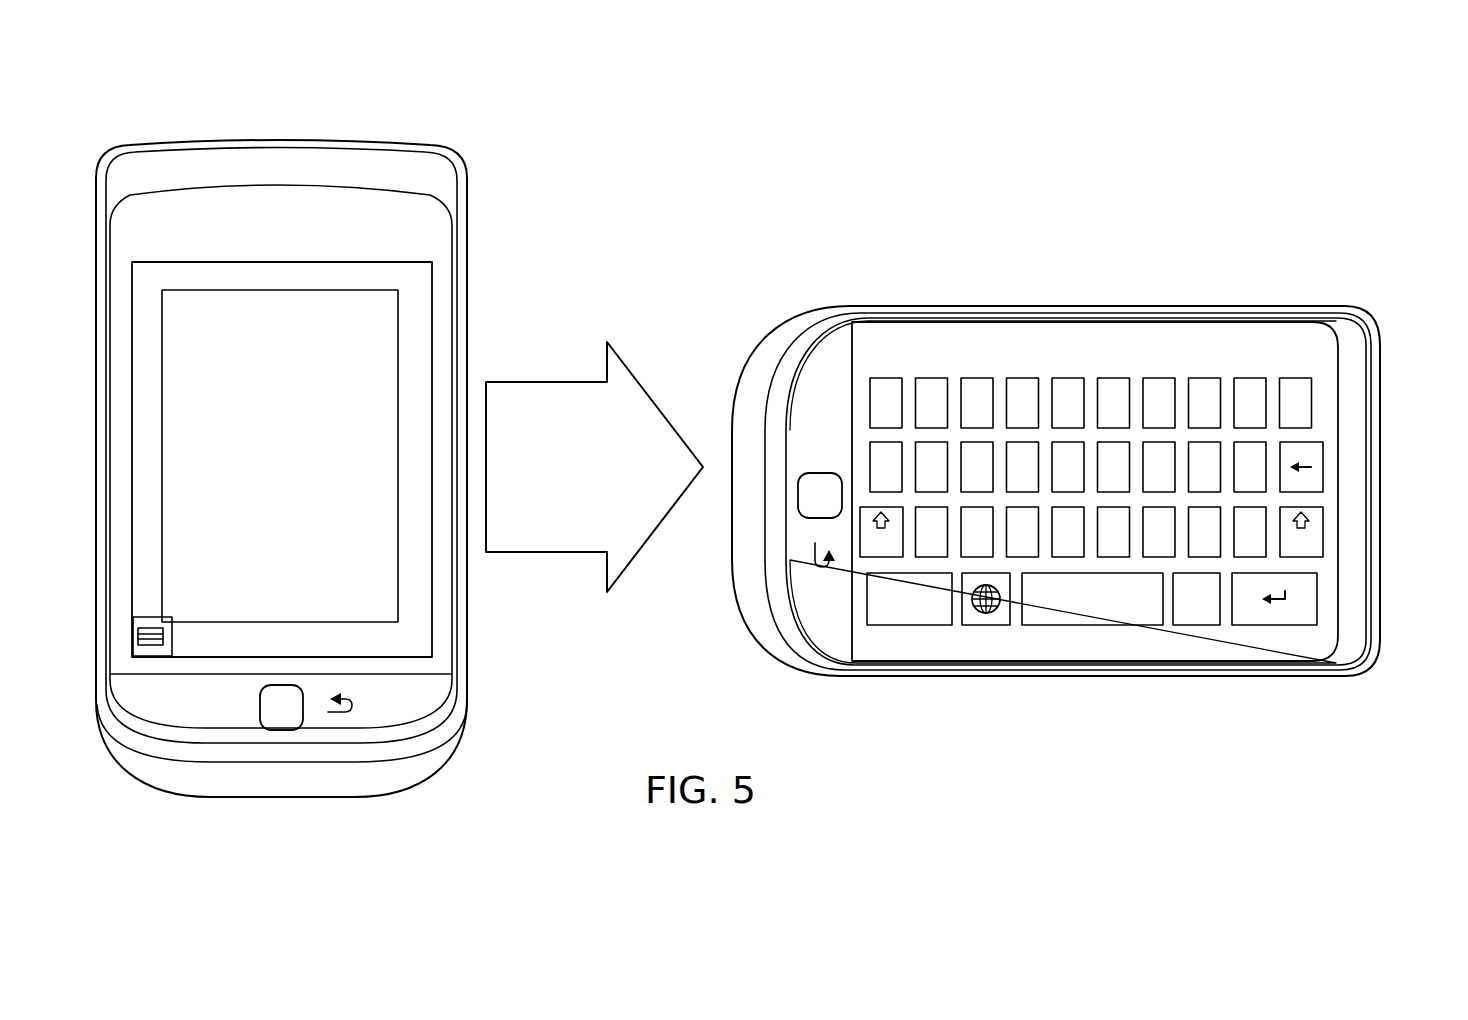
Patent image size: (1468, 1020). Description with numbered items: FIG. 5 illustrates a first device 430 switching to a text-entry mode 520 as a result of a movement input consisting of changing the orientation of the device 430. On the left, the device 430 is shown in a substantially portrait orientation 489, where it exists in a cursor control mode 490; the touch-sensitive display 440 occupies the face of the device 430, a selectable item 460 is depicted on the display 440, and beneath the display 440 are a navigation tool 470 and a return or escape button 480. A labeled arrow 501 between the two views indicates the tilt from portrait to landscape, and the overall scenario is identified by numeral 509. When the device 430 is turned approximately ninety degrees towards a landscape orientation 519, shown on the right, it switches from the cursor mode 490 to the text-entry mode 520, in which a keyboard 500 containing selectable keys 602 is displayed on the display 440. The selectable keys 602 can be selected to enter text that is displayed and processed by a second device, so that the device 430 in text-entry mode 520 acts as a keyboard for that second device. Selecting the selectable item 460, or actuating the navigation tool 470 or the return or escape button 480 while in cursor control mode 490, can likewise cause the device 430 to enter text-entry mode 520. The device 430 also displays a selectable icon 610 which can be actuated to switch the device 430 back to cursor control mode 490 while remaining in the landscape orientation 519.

The first device 430 is at (267, 141).
The touch-sensitive display 440 is at (433, 263).
The selectable item 460 is at (150, 648).
The navigation tool 470 is at (281, 731).
The return or escape button 480 is at (337, 717).
The portrait orientation 489 is at (112, 146).
The cursor control mode 490 is at (423, 80).
The keyboard 500 is at (1157, 440).
The tilt from portrait to landscape arrow 501 is at (560, 327).
The orientation change scenario 509 is at (634, 62).
The landscape orientation 519 is at (1028, 150).
The text-entry mode 520 is at (1180, 208).
The selectable keys 602 is at (1334, 342).
The selectable icon 610 is at (1153, 458).